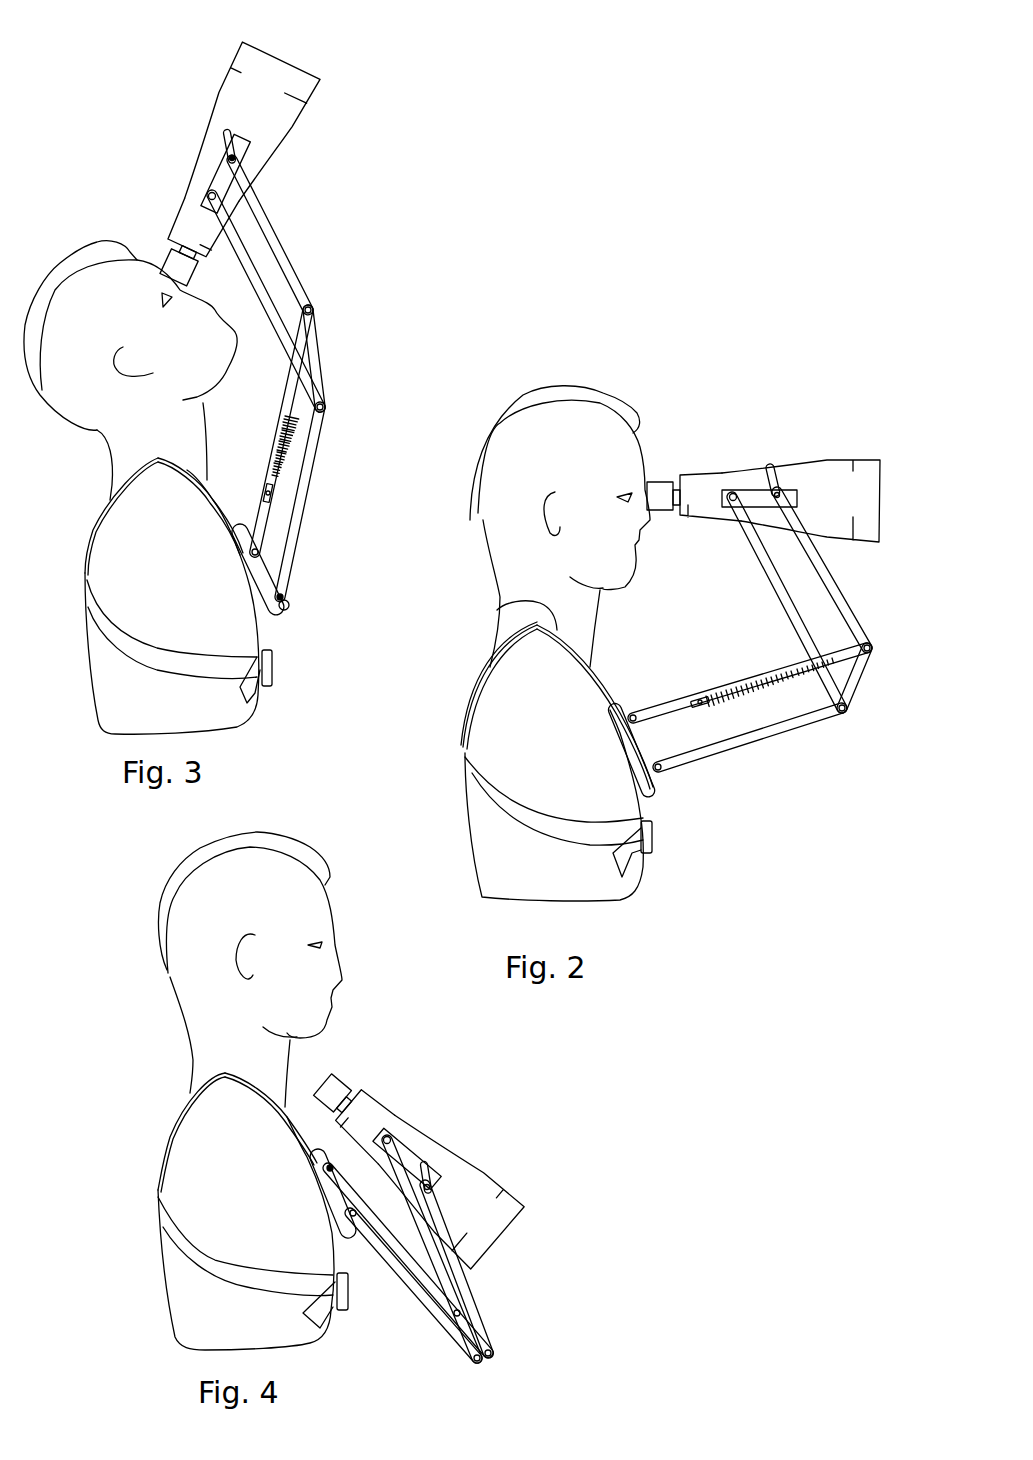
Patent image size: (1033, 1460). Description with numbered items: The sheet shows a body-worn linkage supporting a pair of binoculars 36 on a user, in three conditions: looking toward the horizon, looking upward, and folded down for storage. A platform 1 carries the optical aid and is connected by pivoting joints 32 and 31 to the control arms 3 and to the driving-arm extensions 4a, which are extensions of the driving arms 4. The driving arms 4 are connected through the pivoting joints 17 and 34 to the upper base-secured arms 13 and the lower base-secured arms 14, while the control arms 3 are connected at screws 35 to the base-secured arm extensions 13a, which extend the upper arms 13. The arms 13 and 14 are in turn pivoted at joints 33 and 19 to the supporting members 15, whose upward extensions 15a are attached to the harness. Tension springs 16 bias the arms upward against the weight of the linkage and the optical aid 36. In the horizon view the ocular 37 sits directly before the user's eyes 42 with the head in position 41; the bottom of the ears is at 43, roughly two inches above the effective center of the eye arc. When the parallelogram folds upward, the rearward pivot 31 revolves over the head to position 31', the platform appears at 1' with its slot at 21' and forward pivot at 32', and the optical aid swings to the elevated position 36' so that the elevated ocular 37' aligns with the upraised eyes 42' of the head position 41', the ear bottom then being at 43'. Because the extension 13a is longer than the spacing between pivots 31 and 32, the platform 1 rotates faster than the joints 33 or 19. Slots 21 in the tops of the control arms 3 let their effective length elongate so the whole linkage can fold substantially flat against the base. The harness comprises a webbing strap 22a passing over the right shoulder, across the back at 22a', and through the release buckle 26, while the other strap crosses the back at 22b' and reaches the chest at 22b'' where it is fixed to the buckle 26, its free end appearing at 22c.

In FIG. 2, the platform 1 is at (759, 451).
In FIG. 4, the platform 1 is at (407, 1125).
In FIG. 2, the control arms 3 is at (830, 583).
In FIG. 4, the control arms 3 is at (475, 1310).
In FIG. 2, the driving arms 4 is at (833, 690).
In FIG. 2, the driving-arm extensions 4a is at (775, 598).
In FIG. 4, the driving-arm extensions 4a is at (410, 1205).
In FIG. 2, the upper base-secured arms 13 is at (718, 697).
In FIG. 2, the base-secured arm extensions 13a is at (840, 656).
In FIG. 4, the base-secured arm extensions 13a is at (483, 1338).
In FIG. 2, the lower base-secured arms 14 is at (748, 743).
In FIG. 2, the supporting members 15 is at (650, 747).
In FIG. 2, the upward extensions of the base members 15a is at (628, 700).
In FIG. 2, the tension springs 16 is at (745, 706).
In FIG. 2, the pivoting joint screw 17 is at (803, 668).
In FIG. 2, the pivoting joint 19 is at (664, 772).
In FIG. 2, the slots 21 is at (766, 454).
In FIG. 4, the slots 21 is at (467, 1164).
In FIG. 2, the webbing strap 22a is at (545, 690).
In FIG. 2, the back portion of strap 22a' is at (473, 683).
In FIG. 2, the back portion of strap 22b' is at (515, 789).
In FIG. 2, the chest portion of strap 22b'' is at (557, 827).
In FIG. 2, the strap end 22c is at (633, 857).
In FIG. 2, the release buckle 26 is at (653, 837).
In FIG. 2, the platform rearward pivot point 31 is at (710, 473).
In FIG. 4, the platform rearward pivot point 31 is at (376, 1118).
In FIG. 2, the pivoting joint 32 is at (804, 460).
In FIG. 4, the pivoting joint 32 is at (448, 1138).
In FIG. 2, the pivoting joint screw 33 is at (637, 713).
In FIG. 2, the pivoting joint screw 34 is at (842, 715).
In FIG. 2, the screws 35 is at (872, 645).
In FIG. 2, the binoculars 36 is at (809, 473).
In FIG. 2, the ocular 37 is at (662, 468).
In FIG. 2, the horizon-viewing head position 41 is at (543, 510).
In FIG. 2, the eye position 42 is at (611, 514).
In FIG. 2, the ear-bottom position 43 is at (543, 534).
In FIG. 3, the bracket 1' is at (211, 169).
In FIG. 3, the slot 21' is at (199, 121).
In FIG. 3, the raised platform rearward pivot point 31' is at (191, 213).
In FIG. 3, the pivot in slot 32' is at (281, 233).
In FIG. 3, the elevated viewing position 36' is at (271, 135).
In FIG. 3, the elevated ocular 37' is at (203, 267).
In FIG. 3, the elevated viewing head position 41' is at (130, 360).
In FIG. 3, the upraised eye position 42' is at (182, 321).
In FIG. 3, the ear 43' is at (139, 385).